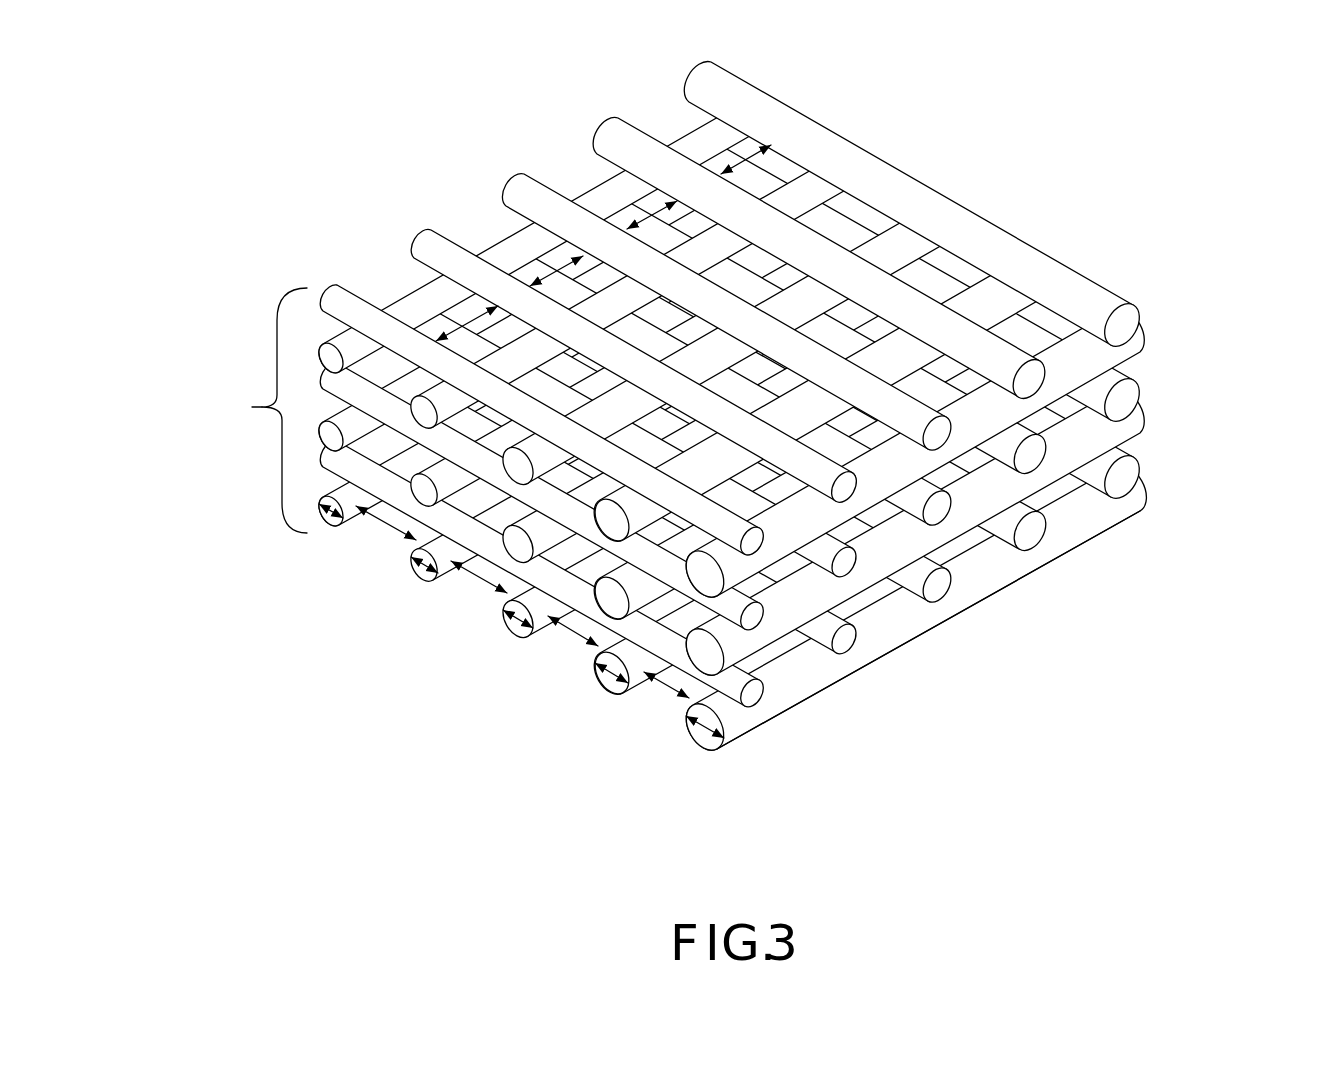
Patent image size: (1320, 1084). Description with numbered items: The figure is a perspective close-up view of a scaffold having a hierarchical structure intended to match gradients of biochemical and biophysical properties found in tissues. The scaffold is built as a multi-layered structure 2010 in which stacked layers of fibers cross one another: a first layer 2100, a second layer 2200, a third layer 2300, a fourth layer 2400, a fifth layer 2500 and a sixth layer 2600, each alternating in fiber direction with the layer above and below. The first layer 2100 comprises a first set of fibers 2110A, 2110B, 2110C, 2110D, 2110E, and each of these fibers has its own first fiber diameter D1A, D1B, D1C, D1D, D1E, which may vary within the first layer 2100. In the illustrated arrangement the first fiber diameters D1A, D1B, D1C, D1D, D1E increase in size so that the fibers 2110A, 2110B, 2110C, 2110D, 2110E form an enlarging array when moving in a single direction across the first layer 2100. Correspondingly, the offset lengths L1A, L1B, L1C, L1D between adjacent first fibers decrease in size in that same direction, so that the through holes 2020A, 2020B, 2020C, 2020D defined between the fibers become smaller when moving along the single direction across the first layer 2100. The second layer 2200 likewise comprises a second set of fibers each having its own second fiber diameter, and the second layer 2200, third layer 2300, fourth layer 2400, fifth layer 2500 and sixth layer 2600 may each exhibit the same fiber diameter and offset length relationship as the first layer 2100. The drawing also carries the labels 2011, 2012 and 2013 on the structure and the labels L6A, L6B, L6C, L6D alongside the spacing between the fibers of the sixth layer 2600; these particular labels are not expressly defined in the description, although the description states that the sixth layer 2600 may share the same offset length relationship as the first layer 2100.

The multi-layered structure 2010 is at (701, 475).
The top rod of uppermost layer 2011 is at (969, 246).
The bottom surface of lattice structure 2012 is at (958, 636).
The height of lattice structure 2013 is at (254, 410).
The through hole 2020A is at (460, 349).
The through hole 2020B is at (547, 292).
The through hole 2020C is at (657, 240).
The through hole 2020D is at (747, 188).
The first layer 2100 is at (741, 507).
The second layer 2200 is at (1145, 470).
The third layer 2300 is at (1145, 425).
The fourth layer 2400 is at (1145, 385).
The fifth layer 2500 is at (1145, 338).
The sixth layer 2600 is at (772, 302).
The first fiber 2110A is at (790, 692).
The first fiber 2110B is at (593, 677).
The first fiber 2110C is at (503, 627).
The first fiber 2110D is at (410, 552).
The first fiber 2110E is at (384, 522).
The first fiber diameter D1A is at (705, 733).
The first fiber diameter D1B is at (610, 673).
The first fiber diameter D1C is at (513, 627).
The first fiber diameter D1D is at (413, 577).
The first fiber diameter D1E is at (328, 523).
The offset length L1A is at (670, 690).
The offset length L1B is at (566, 628).
The offset length L1C is at (455, 569).
The offset length L1D is at (382, 522).
The spacing between rods of sixth layer L6A is at (719, 172).
The spacing between rods of sixth layer L6B is at (631, 226).
The spacing between rods of sixth layer L6C is at (545, 270).
The spacing between rods of sixth layer L6D is at (445, 336).